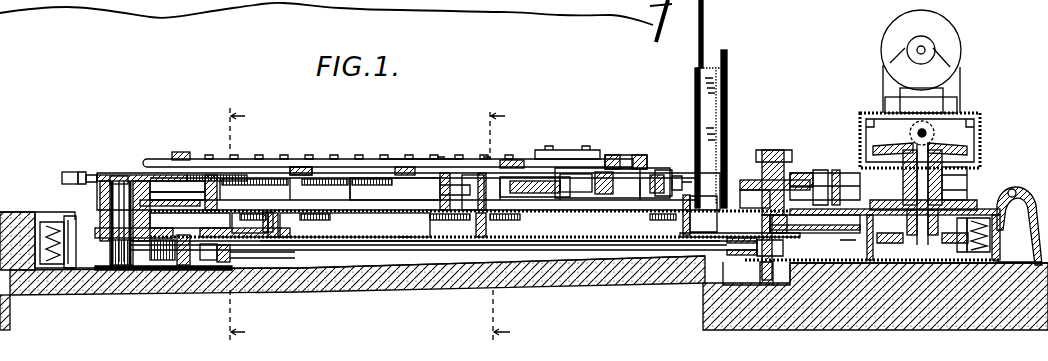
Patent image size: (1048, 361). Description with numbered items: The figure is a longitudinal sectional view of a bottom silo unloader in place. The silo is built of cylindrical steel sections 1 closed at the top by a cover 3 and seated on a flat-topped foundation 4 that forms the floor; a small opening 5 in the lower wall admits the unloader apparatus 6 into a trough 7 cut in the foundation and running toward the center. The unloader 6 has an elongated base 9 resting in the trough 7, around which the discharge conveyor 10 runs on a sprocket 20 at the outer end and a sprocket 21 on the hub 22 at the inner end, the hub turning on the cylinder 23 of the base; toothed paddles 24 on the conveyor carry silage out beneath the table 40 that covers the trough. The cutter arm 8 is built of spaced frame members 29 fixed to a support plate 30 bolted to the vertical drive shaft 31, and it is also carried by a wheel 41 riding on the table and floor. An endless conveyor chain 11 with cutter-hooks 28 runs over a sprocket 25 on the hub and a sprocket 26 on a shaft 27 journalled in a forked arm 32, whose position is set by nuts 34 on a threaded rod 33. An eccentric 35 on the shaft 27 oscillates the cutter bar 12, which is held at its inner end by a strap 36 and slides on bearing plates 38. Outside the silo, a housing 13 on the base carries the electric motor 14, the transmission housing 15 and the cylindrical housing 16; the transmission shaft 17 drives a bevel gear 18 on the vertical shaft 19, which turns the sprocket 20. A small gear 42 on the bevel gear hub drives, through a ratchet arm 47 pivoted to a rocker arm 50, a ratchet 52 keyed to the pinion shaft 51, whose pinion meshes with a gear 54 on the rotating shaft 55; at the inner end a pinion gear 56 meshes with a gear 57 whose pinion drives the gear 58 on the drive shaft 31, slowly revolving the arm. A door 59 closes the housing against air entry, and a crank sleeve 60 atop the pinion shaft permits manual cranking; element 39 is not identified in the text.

The cylindrical steel sections 1 is at (705, 22).
The cover 3 is at (233, 222).
The foundation 4 is at (150, 2).
The opening 5 is at (720, 96).
The unloader apparatus 6 is at (416, 145).
The trough 7 is at (388, 262).
The cutter arm 8 is at (368, 160).
The base 9 is at (405, 238).
The discharge conveyor 10 is at (70, 262).
The endless conveyor chain 11 is at (87, 176).
The cutter bar 12 is at (297, 160).
The housing 13 is at (832, 236).
The electric motor 14 is at (950, 37).
The transmission housing 15 is at (980, 115).
The cylindrical housing 16 is at (945, 197).
The transmission shaft 17 is at (918, 130).
The bevel gear 18 is at (975, 150).
The vertical shaft 19 is at (923, 247).
The sprocket 20 is at (890, 245).
The sprocket 21 is at (80, 215).
The hub 22 is at (165, 203).
The cylinder 23 is at (182, 222).
The teethed paddles 24 is at (57, 265).
The sprocket 25 is at (63, 178).
The sprocket 26 is at (575, 172).
The shaft 27 is at (636, 205).
The cutter-hooks 28 is at (68, 170).
The frame members 29 is at (448, 193).
The support plate 30 is at (157, 178).
The drive shaft 31 is at (125, 178).
The forked arm 32 is at (595, 200).
The threaded rod 33 is at (532, 200).
The nuts 34 is at (565, 200).
The eccentric 35 is at (622, 166).
The strap 36 is at (180, 158).
The bearing plates 38 is at (318, 170).
The guides 39 is at (483, 158).
The table 40 is at (385, 215).
The wheel 41 is at (468, 212).
The small gear 42 is at (982, 156).
The ratchet arm 47 is at (815, 176).
The rocker arm 50 is at (760, 196).
The pinion shaft 51 is at (779, 150).
The ratchet 52 is at (762, 178).
The gear 54 is at (776, 278).
The rotating shaft 55 is at (581, 260).
The pinion gear 56 is at (214, 270).
The gear 57 is at (232, 236).
The gear 58 is at (152, 268).
The door 59 is at (1027, 265).
The crank sleeve 60 is at (790, 150).